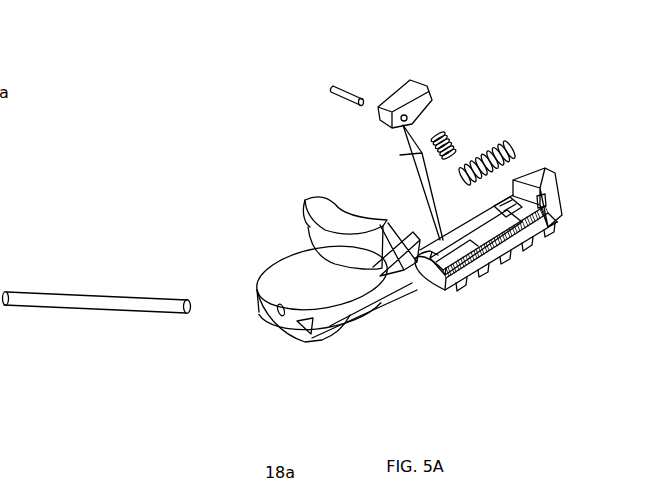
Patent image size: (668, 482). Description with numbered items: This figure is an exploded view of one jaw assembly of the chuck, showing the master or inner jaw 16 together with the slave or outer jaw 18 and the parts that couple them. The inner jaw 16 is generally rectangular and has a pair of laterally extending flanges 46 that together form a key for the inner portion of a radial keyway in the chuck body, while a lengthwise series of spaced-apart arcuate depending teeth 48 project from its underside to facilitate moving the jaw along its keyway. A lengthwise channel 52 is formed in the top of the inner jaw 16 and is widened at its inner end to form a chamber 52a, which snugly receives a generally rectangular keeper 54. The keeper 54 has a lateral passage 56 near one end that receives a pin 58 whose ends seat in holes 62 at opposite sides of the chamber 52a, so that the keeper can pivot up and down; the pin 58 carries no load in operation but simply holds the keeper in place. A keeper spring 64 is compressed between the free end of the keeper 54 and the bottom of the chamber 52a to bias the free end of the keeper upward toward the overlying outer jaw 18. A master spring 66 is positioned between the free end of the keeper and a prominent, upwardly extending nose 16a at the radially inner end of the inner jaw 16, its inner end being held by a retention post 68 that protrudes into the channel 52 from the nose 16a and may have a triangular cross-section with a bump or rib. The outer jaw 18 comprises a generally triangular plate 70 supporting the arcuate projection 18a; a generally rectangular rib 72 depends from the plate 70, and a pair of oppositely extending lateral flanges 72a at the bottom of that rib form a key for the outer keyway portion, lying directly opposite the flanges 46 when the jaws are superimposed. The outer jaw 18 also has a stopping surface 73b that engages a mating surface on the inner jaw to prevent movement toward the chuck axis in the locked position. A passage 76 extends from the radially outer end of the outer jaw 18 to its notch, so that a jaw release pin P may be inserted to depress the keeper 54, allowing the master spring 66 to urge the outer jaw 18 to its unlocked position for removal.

The jaw release pin P is at (128, 297).
The inner jaw 16 is at (430, 294).
The nose 16a is at (556, 203).
The outer jaw 18 is at (250, 240).
The arcuate projection 18a is at (305, 212).
The lateral flanges 46 is at (446, 284).
The teeth 48 is at (540, 248).
The channel 52 is at (490, 212).
The chamber 52a is at (440, 238).
The keeper 54 is at (421, 86).
The lateral passage 56 is at (420, 150).
The pin 58 is at (350, 90).
The holes 62 is at (470, 279).
The keeper spring 64 is at (449, 136).
The master spring 66 is at (502, 143).
The retention post 68 is at (550, 235).
The triangular plate 70 is at (297, 275).
The rib 72 is at (290, 327).
The lateral flanges 72a is at (277, 323).
The stopping surface 73b is at (500, 184).
The passage 76 is at (277, 312).